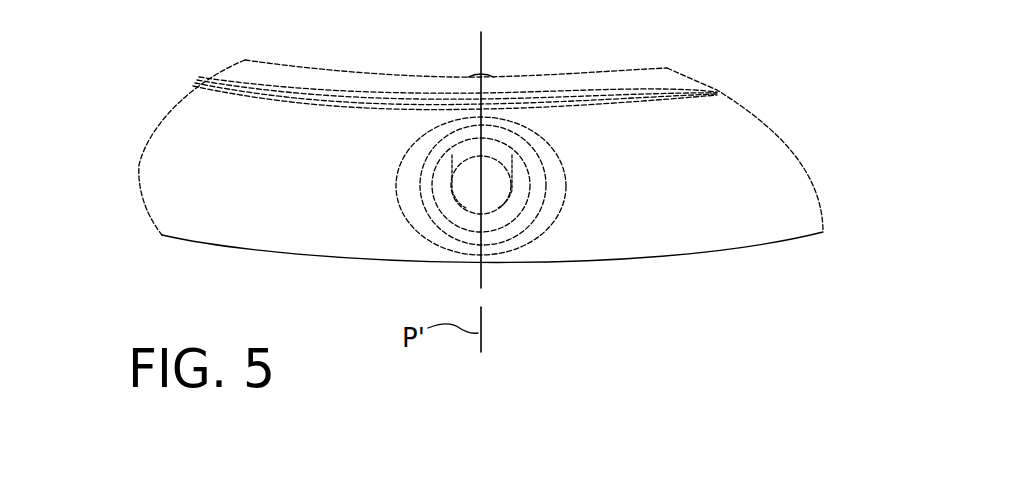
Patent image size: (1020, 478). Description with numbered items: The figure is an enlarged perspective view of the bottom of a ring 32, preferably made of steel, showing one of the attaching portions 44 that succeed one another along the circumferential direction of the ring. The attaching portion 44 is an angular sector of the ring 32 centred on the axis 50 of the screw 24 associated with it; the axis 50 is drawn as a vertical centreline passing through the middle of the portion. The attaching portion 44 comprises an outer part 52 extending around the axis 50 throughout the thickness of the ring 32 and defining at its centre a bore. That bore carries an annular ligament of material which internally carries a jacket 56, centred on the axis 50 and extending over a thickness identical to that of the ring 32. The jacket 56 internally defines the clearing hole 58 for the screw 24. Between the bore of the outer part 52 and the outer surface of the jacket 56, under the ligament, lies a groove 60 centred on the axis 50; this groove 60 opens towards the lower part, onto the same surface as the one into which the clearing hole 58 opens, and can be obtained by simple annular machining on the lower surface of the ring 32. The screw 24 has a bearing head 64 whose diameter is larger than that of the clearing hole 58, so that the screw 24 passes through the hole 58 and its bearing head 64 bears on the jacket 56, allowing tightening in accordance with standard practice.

The ring 32 is at (173, 98).
The attaching portion 44 is at (318, 223).
The screw 24 is at (495, 74).
The bearing head 64 is at (472, 76).
The outer part 52 is at (393, 153).
The groove 60 is at (540, 228).
The jacket 56 is at (523, 145).
The clearing hole 58 is at (443, 202).
The axis 50 is at (483, 275).